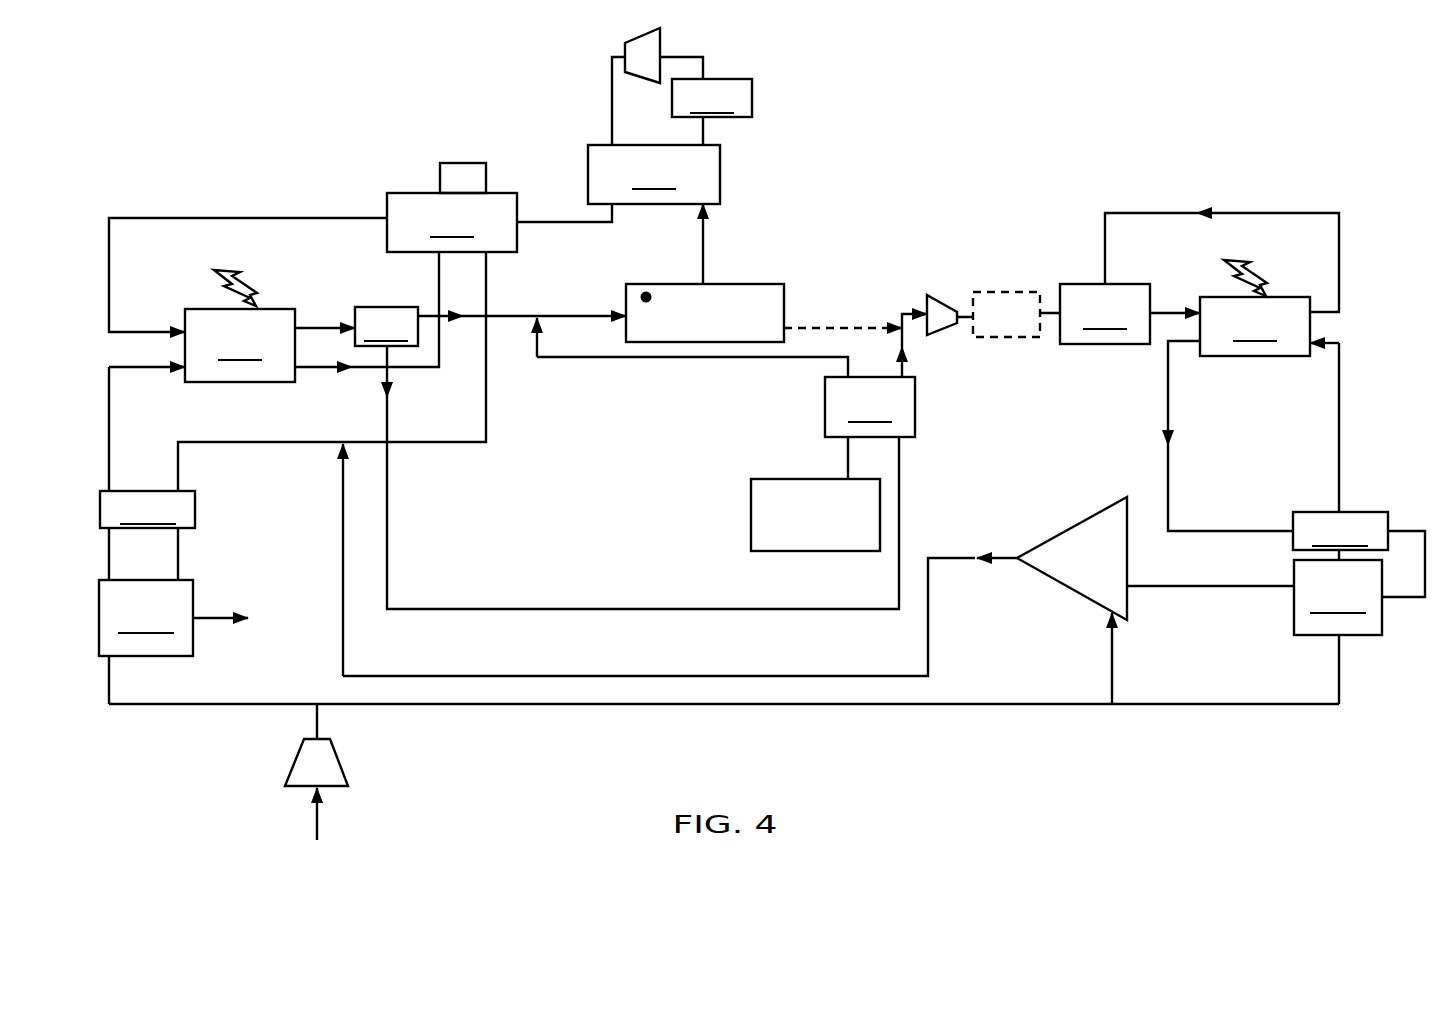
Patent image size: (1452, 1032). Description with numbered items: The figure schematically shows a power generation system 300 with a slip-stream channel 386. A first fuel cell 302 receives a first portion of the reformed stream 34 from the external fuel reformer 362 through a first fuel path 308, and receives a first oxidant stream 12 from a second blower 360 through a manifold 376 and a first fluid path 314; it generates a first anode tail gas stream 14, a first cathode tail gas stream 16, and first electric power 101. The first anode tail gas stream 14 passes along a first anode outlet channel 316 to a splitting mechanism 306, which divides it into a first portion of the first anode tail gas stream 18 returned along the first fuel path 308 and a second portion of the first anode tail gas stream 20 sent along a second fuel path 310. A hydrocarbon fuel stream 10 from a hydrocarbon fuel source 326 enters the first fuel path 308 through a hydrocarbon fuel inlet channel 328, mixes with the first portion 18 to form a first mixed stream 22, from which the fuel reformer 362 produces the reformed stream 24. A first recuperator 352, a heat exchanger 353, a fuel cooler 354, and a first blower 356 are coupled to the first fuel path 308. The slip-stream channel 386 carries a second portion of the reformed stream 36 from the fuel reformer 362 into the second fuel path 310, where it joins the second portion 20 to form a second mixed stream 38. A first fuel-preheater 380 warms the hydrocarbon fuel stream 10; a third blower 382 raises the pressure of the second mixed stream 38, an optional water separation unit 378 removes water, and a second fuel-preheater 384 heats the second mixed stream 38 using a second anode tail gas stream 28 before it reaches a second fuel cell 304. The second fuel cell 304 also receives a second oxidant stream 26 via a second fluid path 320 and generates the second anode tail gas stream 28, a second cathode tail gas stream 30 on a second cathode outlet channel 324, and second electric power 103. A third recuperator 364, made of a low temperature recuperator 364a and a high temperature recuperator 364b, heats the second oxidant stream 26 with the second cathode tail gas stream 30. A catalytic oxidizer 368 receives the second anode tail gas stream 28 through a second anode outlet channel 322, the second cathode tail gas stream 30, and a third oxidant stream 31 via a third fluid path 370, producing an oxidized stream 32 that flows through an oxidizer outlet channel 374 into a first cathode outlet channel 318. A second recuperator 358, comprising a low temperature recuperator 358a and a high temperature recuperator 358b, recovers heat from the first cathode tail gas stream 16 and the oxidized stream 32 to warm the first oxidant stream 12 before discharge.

The power generation system 300 is at (205, 70).
The first fuel cell 302 is at (240, 345).
The second fuel cell 304 is at (1255, 326).
The splitting mechanism 306 is at (386, 326).
The first fuel path 308 is at (212, 218).
The second fuel path 310 is at (390, 512).
The first fluid path 314 is at (110, 672).
The first anode outlet channel 316 is at (318, 326).
The first cathode outlet channel 318 is at (439, 298).
The second fluid path 320 is at (1335, 672).
The second anode outlet channel 322 is at (1290, 213).
The second cathode outlet channel 324 is at (1210, 531).
The hydrocarbon fuel source 326 is at (751, 515).
The hydrocarbon fuel inlet channel 328 is at (690, 359).
The first recuperator 352 is at (452, 207).
The heat exchanger 353 is at (654, 174).
The fuel cooler 354 is at (712, 98).
The first blower 356 is at (625, 35).
The second recuperator 358 is at (195, 516).
The low temperature recuperator 358a is at (173, 618).
The high temperature recuperator 358b is at (147, 509).
The second blower 360 is at (348, 762).
The external fuel reformer 362 is at (781, 284).
The third recuperator 364 is at (1390, 545).
The low temperature recuperator 364a is at (1338, 597).
The high temperature recuperator 364b is at (1340, 531).
The catalytic oxidizer 368 is at (1070, 528).
The third fluid path 370 is at (1109, 684).
The oxidizer outlet channel 374 is at (947, 558).
The manifold 376 is at (600, 706).
The water separation unit 378 is at (1018, 292).
The first fuel-preheater 380 is at (870, 407).
The third blower 382 is at (937, 298).
The second fuel-preheater 384 is at (1105, 314).
The slip-stream channel 386 is at (812, 328).
The first electric power 101 is at (214, 270).
The second electric power 103 is at (1224, 260).
The hydrocarbon fuel stream 10 is at (537, 330).
The first oxidant stream 12 is at (178, 372).
The first anode tail gas stream 14 is at (350, 335).
The first cathode tail gas stream 16 is at (350, 374).
The first portion of the first anode tail gas stream 18 is at (466, 320).
The second portion of the first anode tail gas stream 20 is at (390, 400).
The first mixed stream 22 is at (614, 316).
The reformed stream 24 is at (647, 292).
The second oxidant stream 26 is at (1318, 357).
The second anode tail gas stream 28 is at (1197, 213).
The second cathode tail gas stream 30 is at (1166, 442).
The third oxidant stream 31 is at (1106, 624).
The oxidized stream 32 is at (980, 570).
The first portion of the reformed stream 34 is at (180, 330).
The second portion of the reformed stream 36 is at (895, 325).
The second mixed stream 38 is at (917, 305).